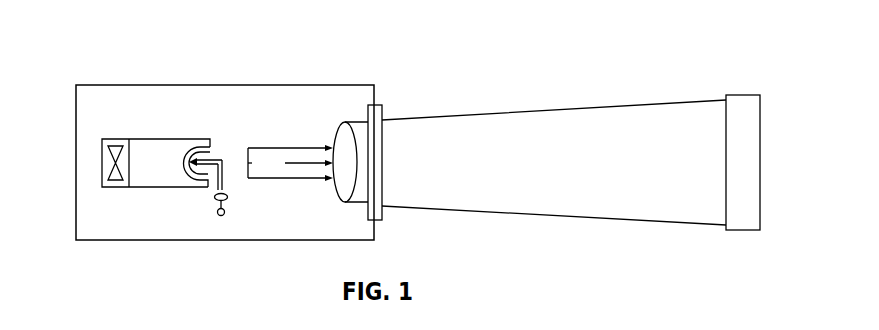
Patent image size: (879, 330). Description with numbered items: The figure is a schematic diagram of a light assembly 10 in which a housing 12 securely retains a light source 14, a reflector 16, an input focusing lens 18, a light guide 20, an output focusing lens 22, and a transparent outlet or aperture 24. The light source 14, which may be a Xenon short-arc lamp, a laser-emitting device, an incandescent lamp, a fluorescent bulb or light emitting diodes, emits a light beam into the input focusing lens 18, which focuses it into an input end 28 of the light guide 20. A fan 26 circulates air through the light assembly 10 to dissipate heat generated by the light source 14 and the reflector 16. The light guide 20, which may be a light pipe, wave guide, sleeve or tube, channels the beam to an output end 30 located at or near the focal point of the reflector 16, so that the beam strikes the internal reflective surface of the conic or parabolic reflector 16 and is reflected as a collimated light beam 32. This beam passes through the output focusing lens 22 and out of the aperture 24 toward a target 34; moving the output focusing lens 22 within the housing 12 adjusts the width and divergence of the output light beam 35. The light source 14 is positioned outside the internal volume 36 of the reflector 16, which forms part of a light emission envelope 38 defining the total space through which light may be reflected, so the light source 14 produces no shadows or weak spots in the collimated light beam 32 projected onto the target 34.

The light assembly 10 is at (97, 50).
The housing 12 is at (262, 84).
The light source 14 is at (224, 214).
The reflector 16 is at (187, 150).
The input focusing lens 18 is at (213, 197).
The light guide 20 is at (248, 149).
The output focusing lens 22 is at (340, 188).
The aperture 24 is at (375, 110).
The fan 26 is at (115, 140).
The input end 28 is at (226, 184).
The output end 30 is at (207, 158).
The collimated light beam 32 is at (292, 161).
The target 34 is at (753, 141).
The output light beam 35 is at (558, 109).
The internal volume 36 is at (200, 157).
The light emission envelope 38 is at (262, 163).